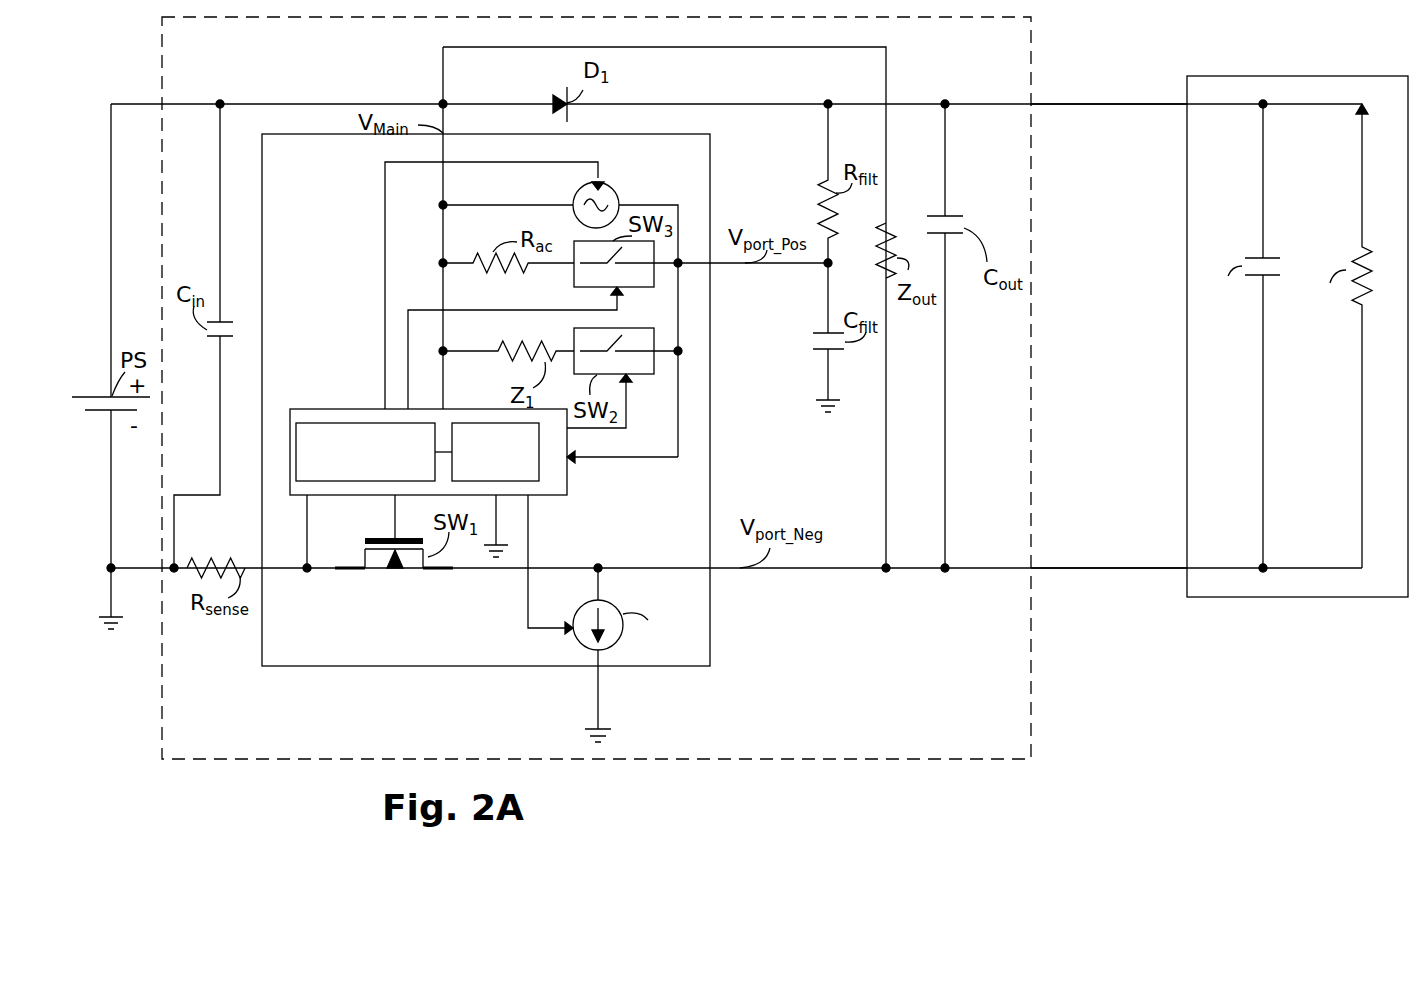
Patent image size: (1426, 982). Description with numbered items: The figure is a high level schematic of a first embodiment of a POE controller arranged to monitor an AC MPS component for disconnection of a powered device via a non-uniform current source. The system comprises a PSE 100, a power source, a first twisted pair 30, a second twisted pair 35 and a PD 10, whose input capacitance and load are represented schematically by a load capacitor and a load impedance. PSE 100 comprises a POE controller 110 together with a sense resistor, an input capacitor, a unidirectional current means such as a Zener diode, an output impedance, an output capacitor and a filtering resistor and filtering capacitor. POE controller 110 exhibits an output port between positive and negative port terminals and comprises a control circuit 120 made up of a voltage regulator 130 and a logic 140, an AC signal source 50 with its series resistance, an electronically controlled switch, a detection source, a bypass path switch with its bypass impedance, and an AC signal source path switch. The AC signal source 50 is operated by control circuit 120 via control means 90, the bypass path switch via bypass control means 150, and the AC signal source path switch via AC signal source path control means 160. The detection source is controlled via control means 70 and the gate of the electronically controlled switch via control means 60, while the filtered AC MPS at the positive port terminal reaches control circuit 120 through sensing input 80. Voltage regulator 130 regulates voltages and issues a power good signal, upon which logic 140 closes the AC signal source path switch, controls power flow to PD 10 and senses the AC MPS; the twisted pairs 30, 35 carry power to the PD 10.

The powered device 10 is at (1306, 597).
The first twisted pair 30 is at (1082, 104).
The second twisted pair 35 is at (1068, 568).
The AC signal source 50 is at (618, 197).
The control means 60 is at (394, 530).
The control means 70 is at (530, 545).
The sensing input 80 is at (660, 462).
The control means 90 is at (385, 205).
The PSE 100 is at (1031, 683).
The POE controller 110 is at (475, 667).
The control circuit 120 is at (414, 432).
The voltage regulator 130 is at (330, 422).
The logic 140 is at (505, 422).
The bypass control means 150 is at (626, 398).
The AC signal source path control means 160 is at (440, 309).